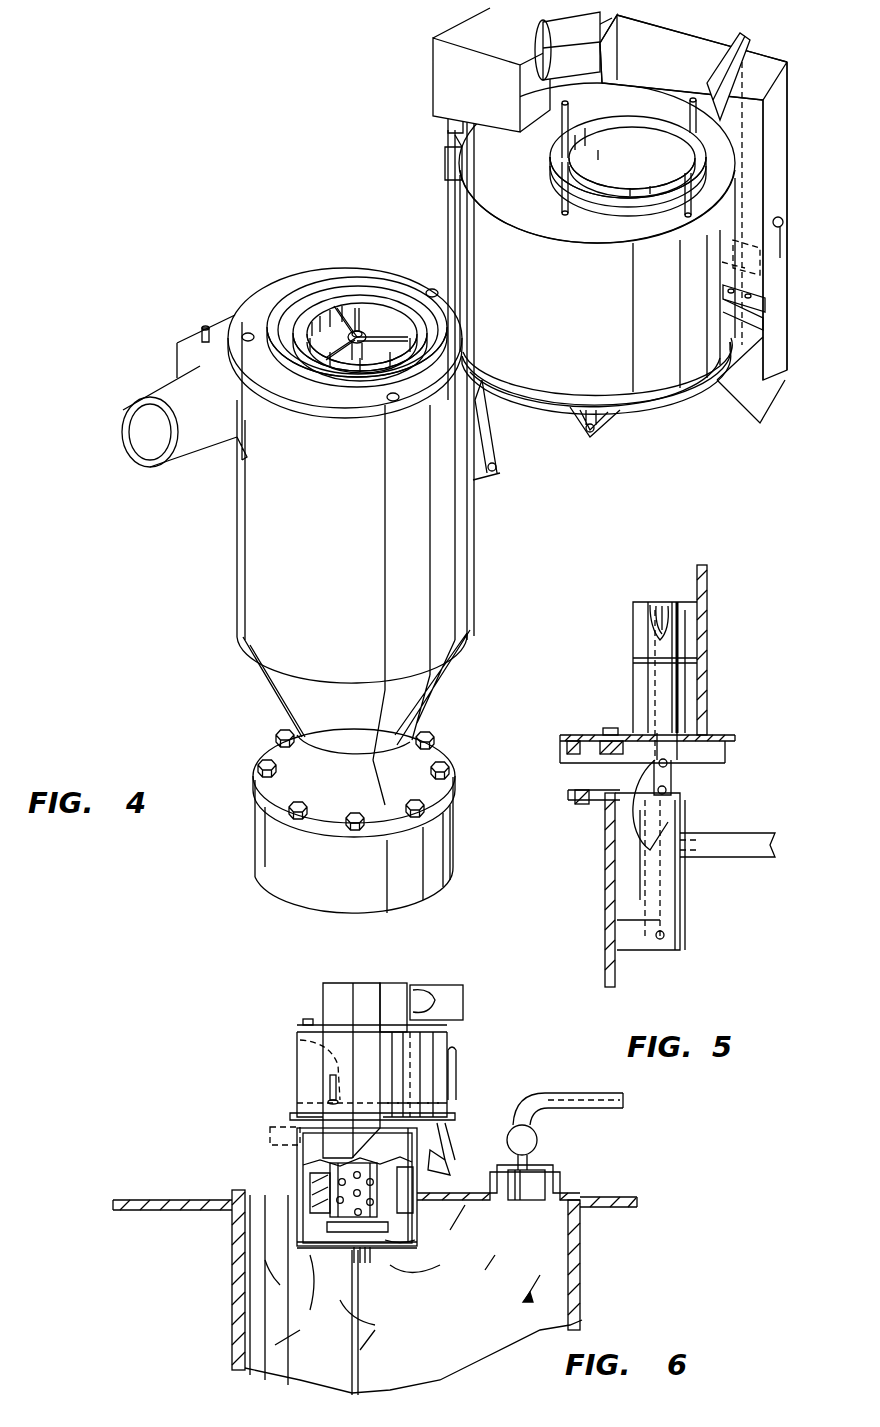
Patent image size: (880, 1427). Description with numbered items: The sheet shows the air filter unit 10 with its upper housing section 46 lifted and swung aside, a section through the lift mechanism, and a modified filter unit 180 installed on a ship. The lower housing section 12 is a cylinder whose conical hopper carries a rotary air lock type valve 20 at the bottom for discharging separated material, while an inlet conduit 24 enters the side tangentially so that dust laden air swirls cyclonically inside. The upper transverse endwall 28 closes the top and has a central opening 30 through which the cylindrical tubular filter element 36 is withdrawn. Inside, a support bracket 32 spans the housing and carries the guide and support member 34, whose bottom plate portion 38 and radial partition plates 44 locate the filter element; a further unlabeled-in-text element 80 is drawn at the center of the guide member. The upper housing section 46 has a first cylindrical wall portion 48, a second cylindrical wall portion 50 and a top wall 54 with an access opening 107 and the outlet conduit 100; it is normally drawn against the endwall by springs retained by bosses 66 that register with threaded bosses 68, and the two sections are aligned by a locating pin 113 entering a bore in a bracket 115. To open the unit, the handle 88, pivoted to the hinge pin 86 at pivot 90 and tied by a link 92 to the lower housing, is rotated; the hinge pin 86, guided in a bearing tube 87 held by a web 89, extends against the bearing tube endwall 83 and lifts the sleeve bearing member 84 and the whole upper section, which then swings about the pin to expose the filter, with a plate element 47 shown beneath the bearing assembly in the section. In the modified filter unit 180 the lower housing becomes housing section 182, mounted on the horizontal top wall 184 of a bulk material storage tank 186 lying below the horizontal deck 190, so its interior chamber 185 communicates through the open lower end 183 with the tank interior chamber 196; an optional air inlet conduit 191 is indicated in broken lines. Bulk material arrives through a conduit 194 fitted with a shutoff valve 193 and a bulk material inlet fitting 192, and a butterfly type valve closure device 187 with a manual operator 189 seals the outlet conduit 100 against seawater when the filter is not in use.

In FIG. 4, the air filter unit 10 is at (230, 582).
In FIG. 4, the lower housing section 12 is at (476, 590).
In FIG. 5, the lower housing section 12 is at (616, 974).
In FIG. 4, the rotary air lock type valve 20 is at (275, 852).
In FIG. 4, the inlet conduit 24 is at (160, 385).
In FIG. 4, the upper transverse endwall 28 is at (303, 278).
In FIG. 6, the upper transverse endwall 28 is at (297, 1095).
In FIG. 4, the central opening 30 is at (275, 345).
In FIG. 6, the central opening 30 is at (447, 1099).
In FIG. 6, the support bracket 32 is at (340, 1255).
In FIG. 4, the guide and support member 34 is at (357, 303).
In FIG. 4, the cylindrical tubular filter element 36 is at (282, 308).
In FIG. 6, the cylindrical tubular filter element 36 is at (330, 1176).
In FIG. 6, the bottom plate portion 38 is at (368, 1255).
In FIG. 4, the partition plates 44 is at (385, 348).
In FIG. 4, the upper housing section 46 is at (670, 395).
In FIG. 5, the upper housing section 46 is at (708, 636).
In FIG. 6, the upper housing section 46 is at (297, 1061).
In FIG. 5, the support plate 47 is at (726, 746).
In FIG. 4, the first cylindrical wall portion 48 is at (642, 395).
In FIG. 4, the second cylindrical wall portion 50 is at (448, 226).
In FIG. 5, the second cylindrical wall portion 50 is at (708, 582).
In FIG. 4, the top wall 54 is at (448, 152).
In FIG. 5, the bosses 66 is at (578, 740).
In FIG. 5, the bosses 68 is at (575, 800).
In FIG. 4, the hub 80 is at (380, 305).
In FIG. 5, the bearing tube endwall 83 is at (650, 631).
In FIG. 5, the cylindrical sleeve bearing member 84 is at (680, 696).
In FIG. 5, the hinge pin 86 is at (686, 656).
In FIG. 5, the bearing tube 87 is at (686, 903).
In FIG. 6, the bearing tube 87 is at (448, 1133).
In FIG. 5, the handle 88 is at (740, 858).
In FIG. 6, the handle 88 is at (457, 1060).
In FIG. 5, the web 89 is at (630, 892).
In FIG. 5, the pivot 90 is at (672, 765).
In FIG. 4, the link 92 is at (500, 458).
In FIG. 5, the link 92 is at (672, 818).
In FIG. 4, the outlet conduit 100 is at (768, 70).
In FIG. 6, the outlet conduit 100 is at (323, 996).
In FIG. 4, the opening 107 is at (603, 215).
In FIG. 4, the locating pin 113 is at (205, 335).
In FIG. 4, the bracket 115 is at (592, 442).
In FIG. 6, the modified filter unit 180 is at (285, 1112).
In FIG. 6, the housing section 182 is at (418, 1228).
In FIG. 6, the lower end 183 is at (400, 1250).
In FIG. 6, the top wall 184 is at (440, 1193).
In FIG. 6, the interior chamber 185 is at (450, 1152).
In FIG. 6, the bulk material storage tank 186 is at (232, 1278).
In FIG. 4, the butterfly type valve closure device 187 is at (780, 298).
In FIG. 6, the butterfly type valve closure device 187 is at (297, 1042).
In FIG. 4, the manual operator 189 is at (783, 226).
In FIG. 6, the manual operator 189 is at (330, 1085).
In FIG. 6, the horizontal deck 190 is at (595, 1197).
In FIG. 6, the air inlet conduit 191 is at (270, 1140).
In FIG. 6, the bulk material inlet fitting 192 is at (541, 1170).
In FIG. 6, the shutoff valve 193 is at (514, 1126).
In FIG. 6, the conduit 194 is at (616, 1095).
In FIG. 6, the interior chamber 196 is at (520, 1304).